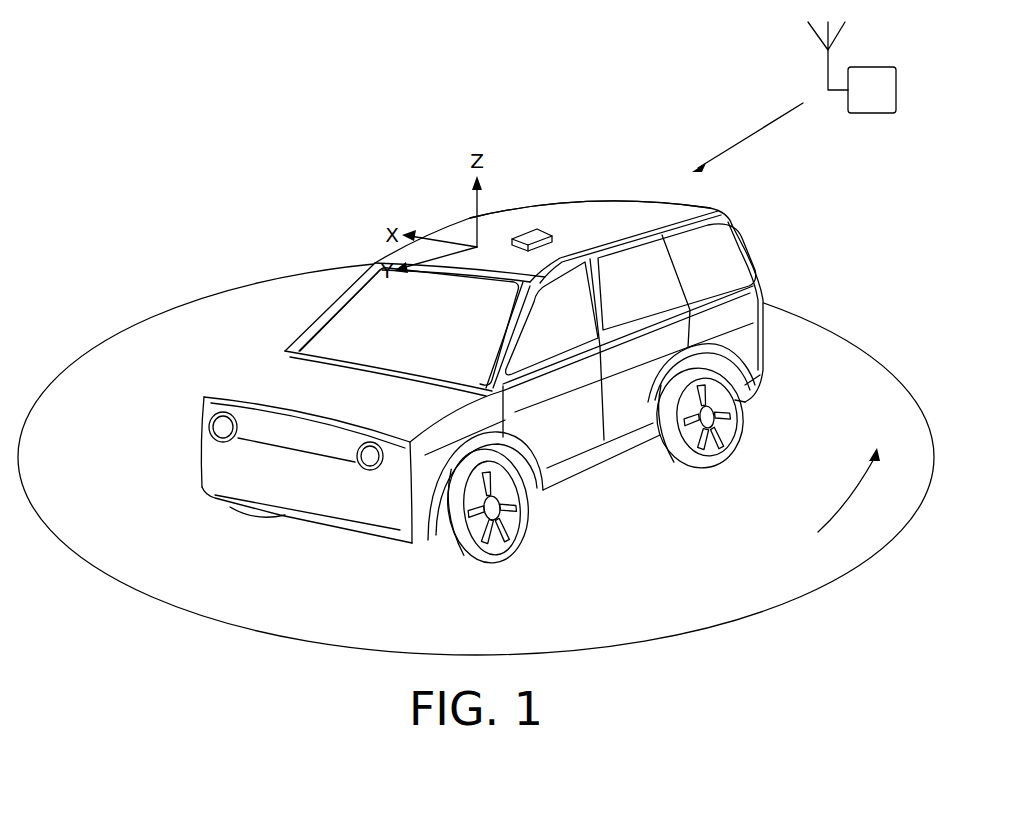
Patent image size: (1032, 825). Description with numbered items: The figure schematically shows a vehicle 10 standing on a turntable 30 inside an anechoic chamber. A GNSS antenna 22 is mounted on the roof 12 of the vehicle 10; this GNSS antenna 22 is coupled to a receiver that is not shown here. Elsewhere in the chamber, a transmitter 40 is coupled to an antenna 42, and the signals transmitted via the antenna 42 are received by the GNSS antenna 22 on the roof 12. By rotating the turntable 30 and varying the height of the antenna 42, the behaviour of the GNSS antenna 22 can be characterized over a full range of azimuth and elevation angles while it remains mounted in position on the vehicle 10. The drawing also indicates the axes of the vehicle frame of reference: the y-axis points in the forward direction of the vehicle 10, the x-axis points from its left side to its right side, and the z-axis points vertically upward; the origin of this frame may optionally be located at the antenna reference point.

The vehicle 10 is at (277, 372).
The roof 12 is at (598, 198).
The GNSS antenna 22 is at (534, 232).
The turntable 30 is at (845, 556).
The transmitter 40 is at (884, 67).
The antenna 42 is at (812, 33).